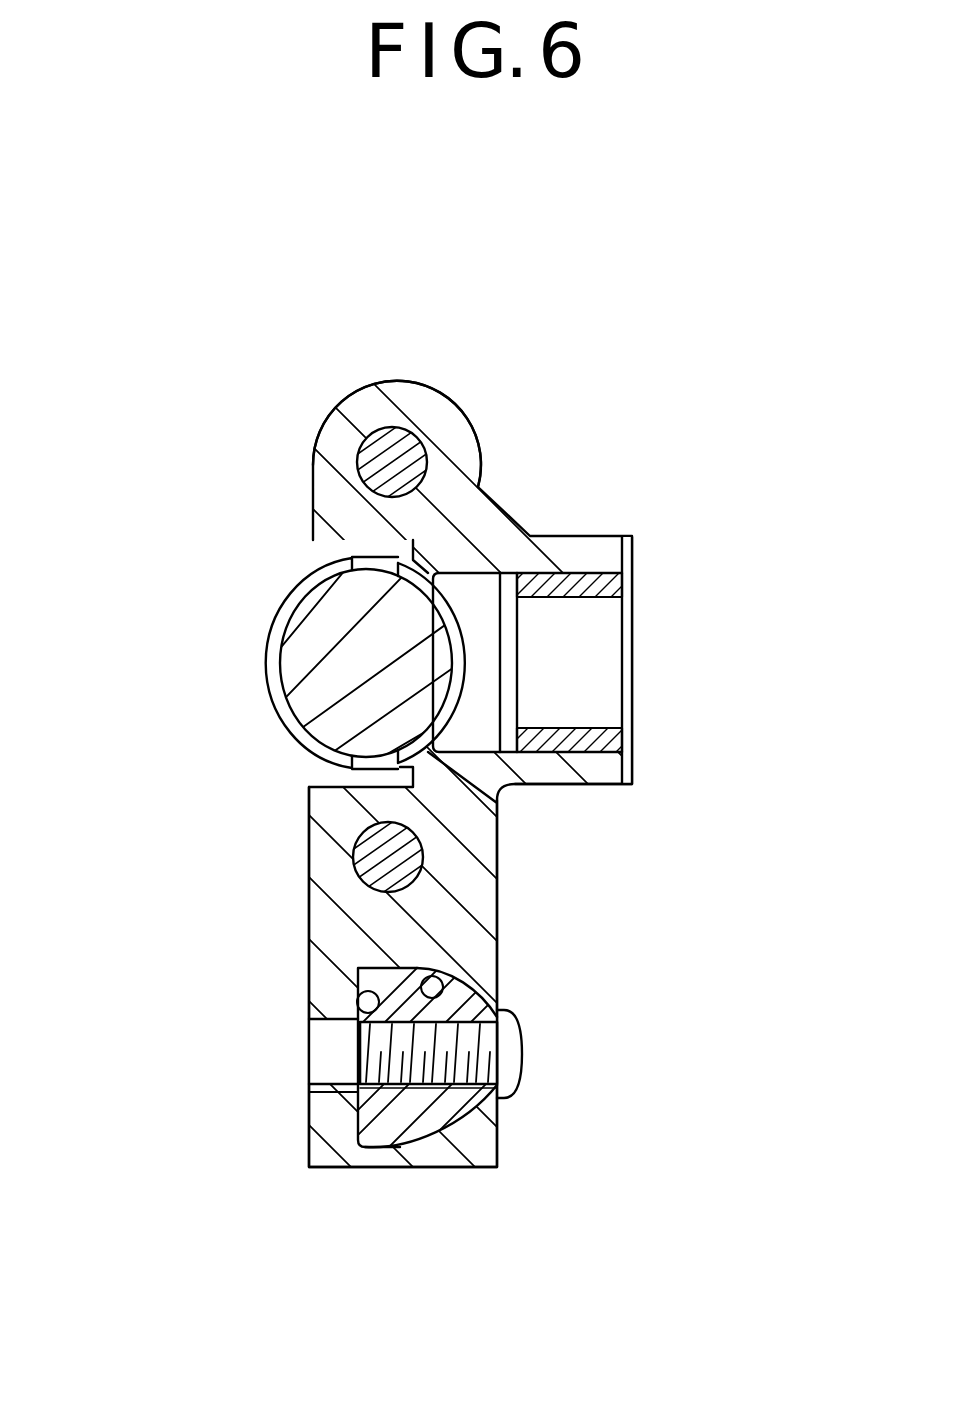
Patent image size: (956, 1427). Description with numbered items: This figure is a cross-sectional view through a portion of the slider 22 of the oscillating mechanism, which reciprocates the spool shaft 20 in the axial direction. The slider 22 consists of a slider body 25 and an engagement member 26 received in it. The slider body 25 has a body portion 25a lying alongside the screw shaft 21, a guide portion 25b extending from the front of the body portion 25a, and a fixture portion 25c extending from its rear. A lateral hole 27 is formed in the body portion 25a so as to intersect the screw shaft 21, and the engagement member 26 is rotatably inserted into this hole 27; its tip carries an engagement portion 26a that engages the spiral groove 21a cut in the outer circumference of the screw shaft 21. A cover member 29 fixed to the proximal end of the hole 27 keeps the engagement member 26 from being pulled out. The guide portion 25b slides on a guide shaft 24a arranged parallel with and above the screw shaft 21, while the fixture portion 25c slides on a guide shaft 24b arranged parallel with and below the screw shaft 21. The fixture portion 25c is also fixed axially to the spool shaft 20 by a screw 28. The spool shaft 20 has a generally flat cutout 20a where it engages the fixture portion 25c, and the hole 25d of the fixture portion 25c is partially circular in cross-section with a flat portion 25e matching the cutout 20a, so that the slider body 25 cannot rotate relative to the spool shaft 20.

The spool shaft 20 is at (431, 1124).
The cutout 20a is at (357, 1124).
The screw shaft 21 is at (343, 653).
The spiral groove 21a is at (307, 745).
The slider 22 is at (726, 456).
The guide shaft 24a is at (372, 455).
The guide shaft 24b is at (378, 858).
The slider body 25 is at (534, 495).
The body portion 25a is at (437, 412).
The guide portion 25b is at (603, 788).
The fixture portion 25c is at (475, 900).
The hole 25d is at (500, 967).
The flat portion 25e is at (365, 1019).
The engagement member 26 is at (592, 655).
The engagement portion 26a is at (480, 603).
The lateral hole 27 is at (612, 563).
The screw 28 is at (510, 1053).
The cover member 29 is at (630, 728).